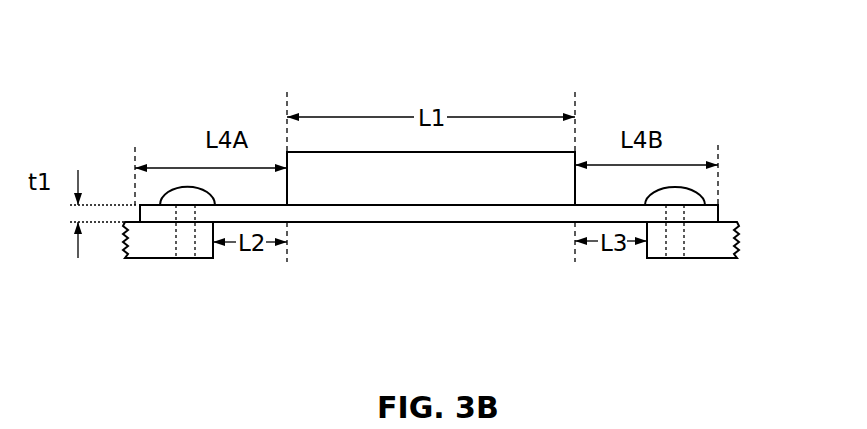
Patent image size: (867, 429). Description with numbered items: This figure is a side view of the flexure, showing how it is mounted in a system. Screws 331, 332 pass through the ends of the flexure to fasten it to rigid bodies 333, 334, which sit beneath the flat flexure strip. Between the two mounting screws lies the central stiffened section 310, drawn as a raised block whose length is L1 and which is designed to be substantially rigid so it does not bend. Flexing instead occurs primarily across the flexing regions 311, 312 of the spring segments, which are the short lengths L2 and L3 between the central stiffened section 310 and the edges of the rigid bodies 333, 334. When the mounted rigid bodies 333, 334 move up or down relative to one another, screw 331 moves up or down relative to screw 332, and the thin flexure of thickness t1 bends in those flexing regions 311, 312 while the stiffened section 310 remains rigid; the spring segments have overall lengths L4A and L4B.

The central stiffened section 310 is at (575, 92).
The flexing region 311 is at (287, 262).
The flexing region 312 is at (647, 262).
The screw 331 is at (163, 190).
The screw 332 is at (672, 186).
The rigid body 333 is at (142, 258).
The rigid body 334 is at (700, 258).